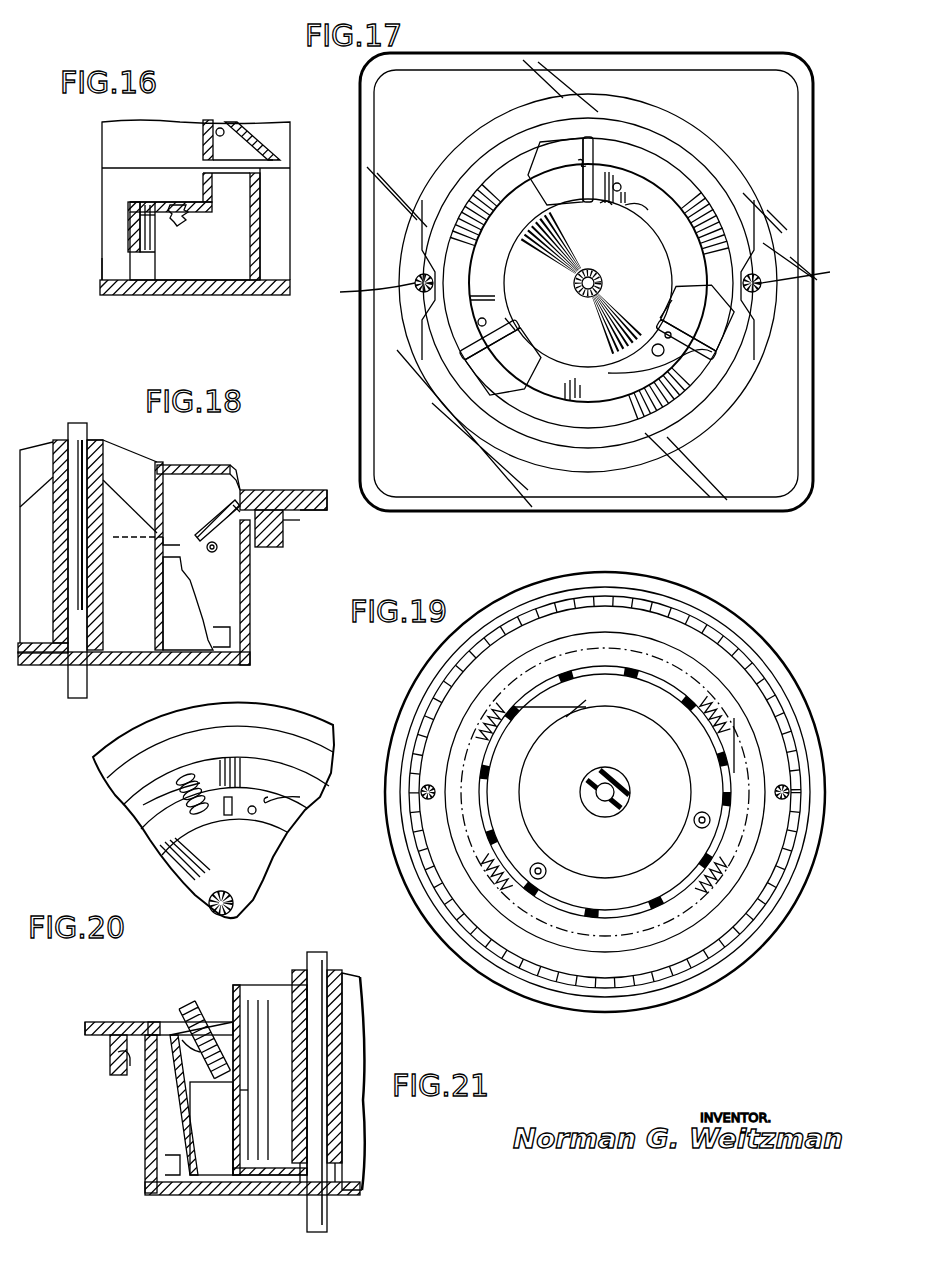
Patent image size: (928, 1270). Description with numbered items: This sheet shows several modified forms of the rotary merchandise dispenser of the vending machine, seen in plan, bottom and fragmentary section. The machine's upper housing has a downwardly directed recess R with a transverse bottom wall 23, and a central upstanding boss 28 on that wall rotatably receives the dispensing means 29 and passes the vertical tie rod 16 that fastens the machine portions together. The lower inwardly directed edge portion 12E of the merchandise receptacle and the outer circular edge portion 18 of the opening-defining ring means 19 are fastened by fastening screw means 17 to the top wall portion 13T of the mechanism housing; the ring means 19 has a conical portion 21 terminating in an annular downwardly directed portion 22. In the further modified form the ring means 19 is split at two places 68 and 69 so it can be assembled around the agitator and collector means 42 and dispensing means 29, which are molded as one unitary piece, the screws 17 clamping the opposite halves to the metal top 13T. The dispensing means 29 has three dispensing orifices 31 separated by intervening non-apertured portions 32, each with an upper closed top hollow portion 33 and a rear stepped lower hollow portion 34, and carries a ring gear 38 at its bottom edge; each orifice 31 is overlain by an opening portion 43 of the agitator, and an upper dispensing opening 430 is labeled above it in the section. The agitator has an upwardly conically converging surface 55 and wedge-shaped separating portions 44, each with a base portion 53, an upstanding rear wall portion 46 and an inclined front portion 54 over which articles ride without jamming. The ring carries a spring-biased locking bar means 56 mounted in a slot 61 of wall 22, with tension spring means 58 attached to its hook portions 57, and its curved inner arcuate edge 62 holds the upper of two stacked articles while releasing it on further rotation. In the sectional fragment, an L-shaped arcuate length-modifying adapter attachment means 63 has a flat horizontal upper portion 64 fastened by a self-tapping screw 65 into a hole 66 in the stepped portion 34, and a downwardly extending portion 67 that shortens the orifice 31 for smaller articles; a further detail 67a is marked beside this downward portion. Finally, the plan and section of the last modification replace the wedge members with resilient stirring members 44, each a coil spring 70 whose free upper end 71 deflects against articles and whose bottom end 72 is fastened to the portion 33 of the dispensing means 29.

In FIG. 17, the lower inwardly directed edge portion 12E is at (786, 108).
In FIG. 18, the lower inwardly directed edge portion 12E is at (278, 489).
In FIG. 21, the lower inwardly directed edge portion 12E is at (103, 1021).
In FIG. 17, the top wall portion 13T is at (760, 488).
In FIG. 18, the top wall portion 13T is at (324, 500).
In FIG. 21, the top wall portion 13T is at (86, 1030).
In FIG. 17, the vertical tie rod 16 is at (601, 280).
In FIG. 18, the vertical tie rod 16 is at (80, 422).
In FIG. 19, the vertical tie rod 16 is at (613, 783).
In FIG. 21, the vertical tie rod 16 is at (328, 955).
In FIG. 17, the fastening screw means 17 is at (592, 277).
In FIG. 17, the outer circular edge portion 18 is at (590, 42).
In FIG. 18, the outer circular edge portion 18 is at (284, 524).
In FIG. 21, the outer circular edge portion 18 is at (122, 1056).
In FIG. 17, the opening-defining ring means 19 is at (446, 328).
In FIG. 18, the opening-defining ring means 19 is at (70, 545).
In FIG. 19, the opening-defining ring means 19 is at (605, 792).
In FIG. 21, the opening-defining ring means 19 is at (172, 1026).
In FIG. 17, the conical portion 21 is at (577, 430).
In FIG. 18, the conical portion 21 is at (205, 529).
In FIG. 19, the conical portion 21 is at (605, 792).
In FIG. 20, the conical portion 21 is at (150, 798).
In FIG. 21, the conical portion 21 is at (184, 1059).
In FIG. 17, the annular downwardly directed portion 22 is at (616, 182).
In FIG. 18, the annular downwardly directed portion 22 is at (215, 553).
In FIG. 20, the annular downwardly directed portion 22 is at (286, 803).
In FIG. 21, the annular downwardly directed portion 22 is at (205, 1092).
In FIG. 16, the transverse bottom wall 23 is at (213, 289).
In FIG. 18, the transverse bottom wall 23 is at (155, 659).
In FIG. 21, the transverse bottom wall 23 is at (356, 1196).
In FIG. 18, the upstanding boss 28 is at (93, 634).
In FIG. 21, the upstanding boss 28 is at (338, 1163).
In FIG. 16, the dispensing means 29 is at (152, 181).
In FIG. 17, the dispensing means 29 is at (650, 233).
In FIG. 18, the dispensing means 29 is at (170, 532).
In FIG. 19, the dispensing means 29 is at (795, 772).
In FIG. 20, the dispensing means 29 is at (159, 828).
In FIG. 21, the dispensing means 29 is at (368, 1046).
In FIG. 16, the dispensing orifice 31 is at (113, 260).
In FIG. 17, the dispensing orifice 31 is at (653, 331).
In FIG. 21, the dispensing orifice 31 is at (218, 1149).
In FIG. 18, the intervening non-apertured portion 32 is at (240, 519).
In FIG. 18, the upper closed top hollow portion 33 is at (162, 543).
In FIG. 21, the upper closed top hollow portion 33 is at (222, 1096).
In FIG. 16, the rear stepped lower hollow portion 34 is at (196, 210).
In FIG. 17, the rear stepped lower hollow portion 34 is at (641, 208).
In FIG. 20, the rear stepped lower hollow portion 34 is at (234, 820).
In FIG. 18, the ring gear 38 is at (226, 638).
In FIG. 21, the ring gear 38 is at (167, 1165).
In FIG. 17, the agitator and collector means 42 is at (666, 257).
In FIG. 18, the agitator and collector means 42 is at (176, 461).
In FIG. 19, the agitator and collector means 42 is at (588, 695).
In FIG. 20, the agitator and collector means 42 is at (233, 808).
In FIG. 21, the agitator and collector means 42 is at (368, 991).
In FIG. 16, the opening portion 43 is at (183, 181).
In FIG. 16, the member 430 is at (152, 136).
In FIG. 21, the member 430 is at (231, 1012).
In FIG. 16, the separating portion 44 is at (253, 118).
In FIG. 17, the separating portion 44 is at (569, 139).
In FIG. 18, the separating portion 44 is at (237, 469).
In FIG. 20, the separating portion 44 is at (176, 777).
In FIG. 21, the separating portion 44 is at (212, 997).
In FIG. 17, the rear wall portion 46 is at (578, 161).
In FIG. 16, the base portion 53 is at (216, 124).
In FIG. 18, the base portion 53 is at (230, 488).
In FIG. 17, the inclined front portion 54 is at (604, 272).
In FIG. 17, the upwardly conically converging surface 55 is at (588, 283).
In FIG. 18, the upwardly conically converging surface 55 is at (144, 450).
In FIG. 19, the upwardly conically converging surface 55 is at (605, 792).
In FIG. 21, the upwardly conically converging surface 55 is at (290, 972).
In FIG. 17, the locking bar means 56 is at (597, 397).
In FIG. 19, the locking bar means 56 is at (564, 692).
In FIG. 19, the hook portion 57 is at (494, 704).
In FIG. 19, the tension spring means 58 is at (716, 896).
In FIG. 17, the slot 61 is at (684, 360).
In FIG. 17, the curved inner arcuate edge 62 is at (563, 362).
In FIG. 19, the curved inner arcuate edge 62 is at (569, 718).
In FIG. 16, the arcuate length-modifying adapter attachment means 63 is at (121, 200).
In FIG. 16, the flat horizontal upper portion 64 is at (138, 201).
In FIG. 16, the self-tapping screw 65 is at (184, 196).
In FIG. 16, the hole 66 is at (179, 228).
In FIG. 17, the hole 66 is at (604, 206).
In FIG. 19, the hole 66 is at (547, 871).
In FIG. 20, the hole 66 is at (221, 903).
In FIG. 16, the downwardly extending portion 67 is at (127, 229).
In FIG. 16, the rib 67a is at (154, 241).
In FIG. 17, the split 68 is at (456, 276).
In FIG. 17, the split 69 is at (730, 282).
In FIG. 20, the coil spring 70 is at (198, 823).
In FIG. 21, the coil spring 70 is at (248, 1042).
In FIG. 21, the free upper end 71 is at (198, 1007).
In FIG. 21, the bottom end 72 is at (231, 1076).
In FIG. 18, the downwardly directed recess R is at (226, 603).
In FIG. 21, the downwardly directed recess R is at (169, 1132).